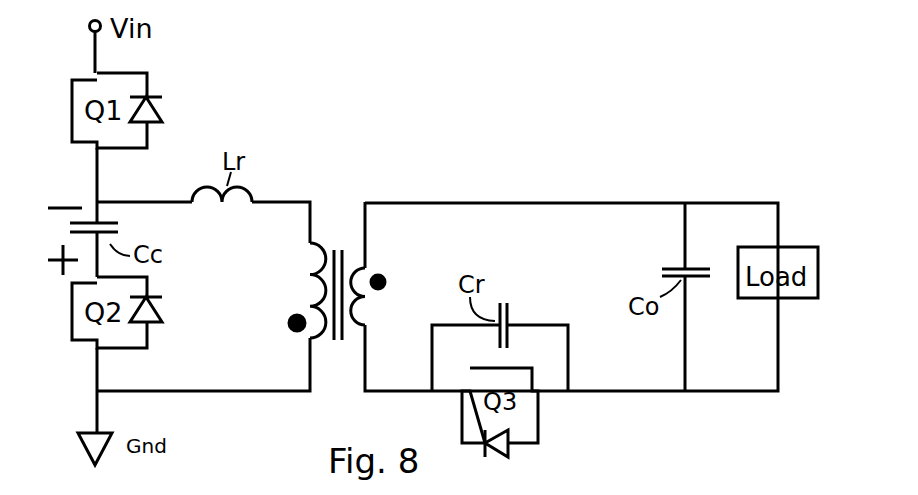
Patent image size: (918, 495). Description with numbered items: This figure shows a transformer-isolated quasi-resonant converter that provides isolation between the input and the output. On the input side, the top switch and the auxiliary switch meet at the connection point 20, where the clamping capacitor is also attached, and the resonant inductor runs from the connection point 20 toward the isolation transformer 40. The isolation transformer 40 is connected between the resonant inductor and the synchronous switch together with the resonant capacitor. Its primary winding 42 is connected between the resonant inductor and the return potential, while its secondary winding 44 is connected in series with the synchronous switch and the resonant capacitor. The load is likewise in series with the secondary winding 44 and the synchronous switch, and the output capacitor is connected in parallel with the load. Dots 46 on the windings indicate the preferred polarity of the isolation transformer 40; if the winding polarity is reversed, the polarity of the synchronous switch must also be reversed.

The connection point 20 is at (97, 202).
The isolation transformer 40 is at (332, 247).
The primary winding 42 is at (318, 274).
The secondary winding 44 is at (360, 314).
The dots 46 is at (292, 326).